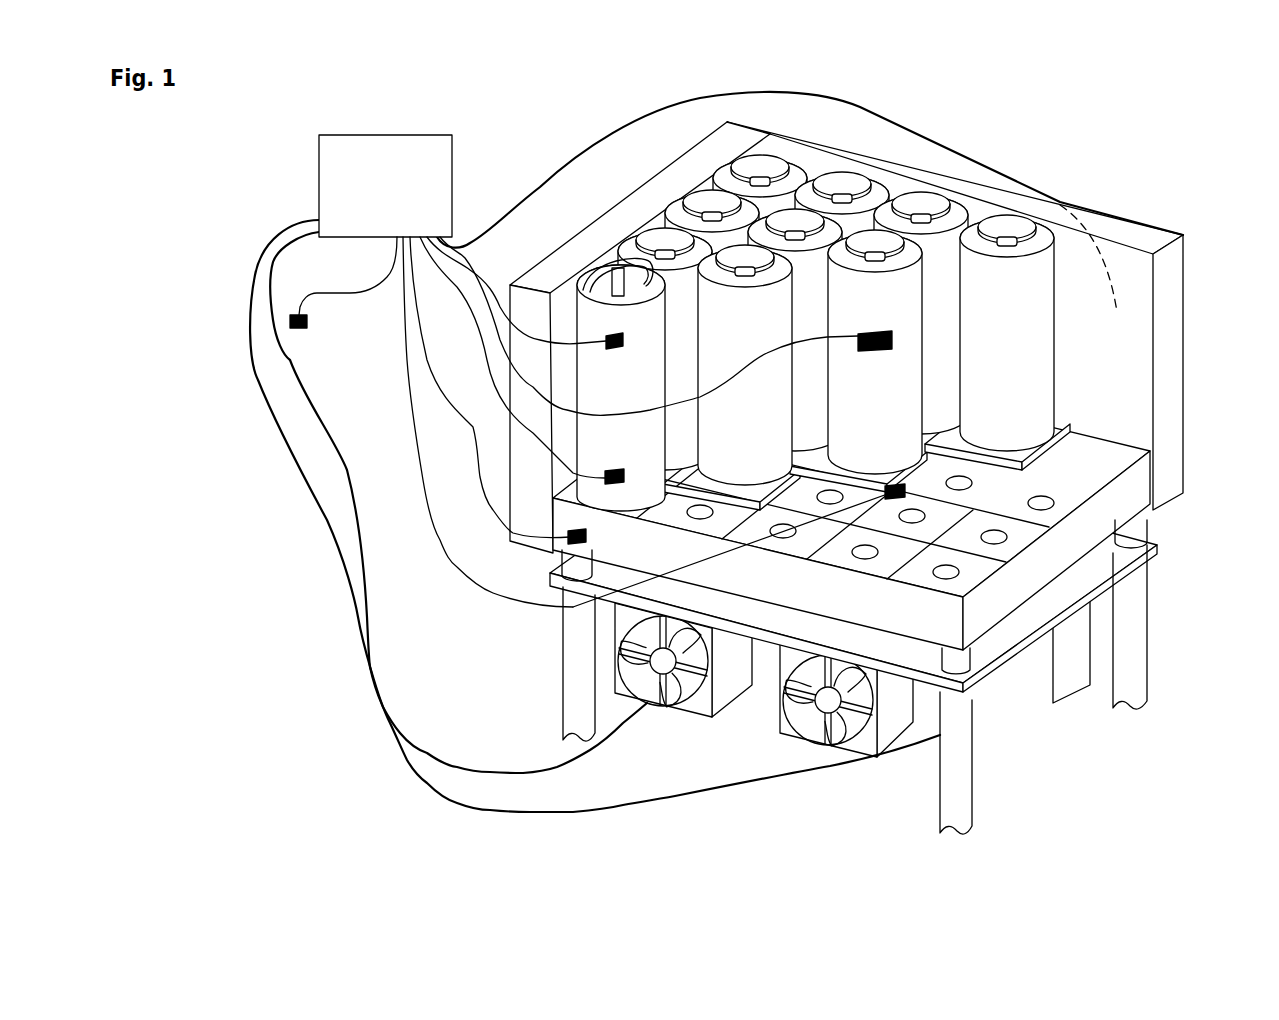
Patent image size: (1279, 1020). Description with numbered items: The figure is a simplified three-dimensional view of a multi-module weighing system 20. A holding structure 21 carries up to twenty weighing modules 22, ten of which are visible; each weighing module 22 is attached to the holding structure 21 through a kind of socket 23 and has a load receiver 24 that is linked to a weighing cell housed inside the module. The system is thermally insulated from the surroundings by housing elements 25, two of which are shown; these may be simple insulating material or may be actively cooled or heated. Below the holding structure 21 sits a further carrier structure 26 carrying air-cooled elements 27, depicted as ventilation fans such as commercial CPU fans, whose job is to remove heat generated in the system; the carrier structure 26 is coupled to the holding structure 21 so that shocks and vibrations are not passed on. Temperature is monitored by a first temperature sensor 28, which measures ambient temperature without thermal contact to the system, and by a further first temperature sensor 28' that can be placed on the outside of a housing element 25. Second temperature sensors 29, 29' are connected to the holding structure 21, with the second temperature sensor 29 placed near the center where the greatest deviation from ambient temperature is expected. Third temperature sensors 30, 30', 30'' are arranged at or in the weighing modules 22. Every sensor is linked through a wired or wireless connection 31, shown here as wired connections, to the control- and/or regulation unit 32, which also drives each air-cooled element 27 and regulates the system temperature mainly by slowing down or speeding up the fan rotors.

The multi-module weighing system 20 is at (1134, 102).
The holding structure 21 is at (1120, 500).
The weighing module 22 is at (918, 327).
The socket 23 is at (903, 490).
The load receiver 24 is at (1010, 222).
The housing element 25 is at (846, 290).
The carrier structure 26 is at (1107, 563).
The air-cooled element 27 is at (883, 723).
The first temperature sensor 28 is at (291, 282).
The further first temperature sensor 28' is at (1161, 258).
The second temperature sensor 29 is at (831, 422).
The second temperature sensor 29' is at (397, 390).
The third temperature sensor 30 is at (850, 326).
The third temperature sensor 30' is at (416, 360).
The third temperature sensor 30'' is at (525, 188).
The wired or wireless connection 31 is at (716, 419).
The control- and/or regulation unit 32 is at (385, 186).